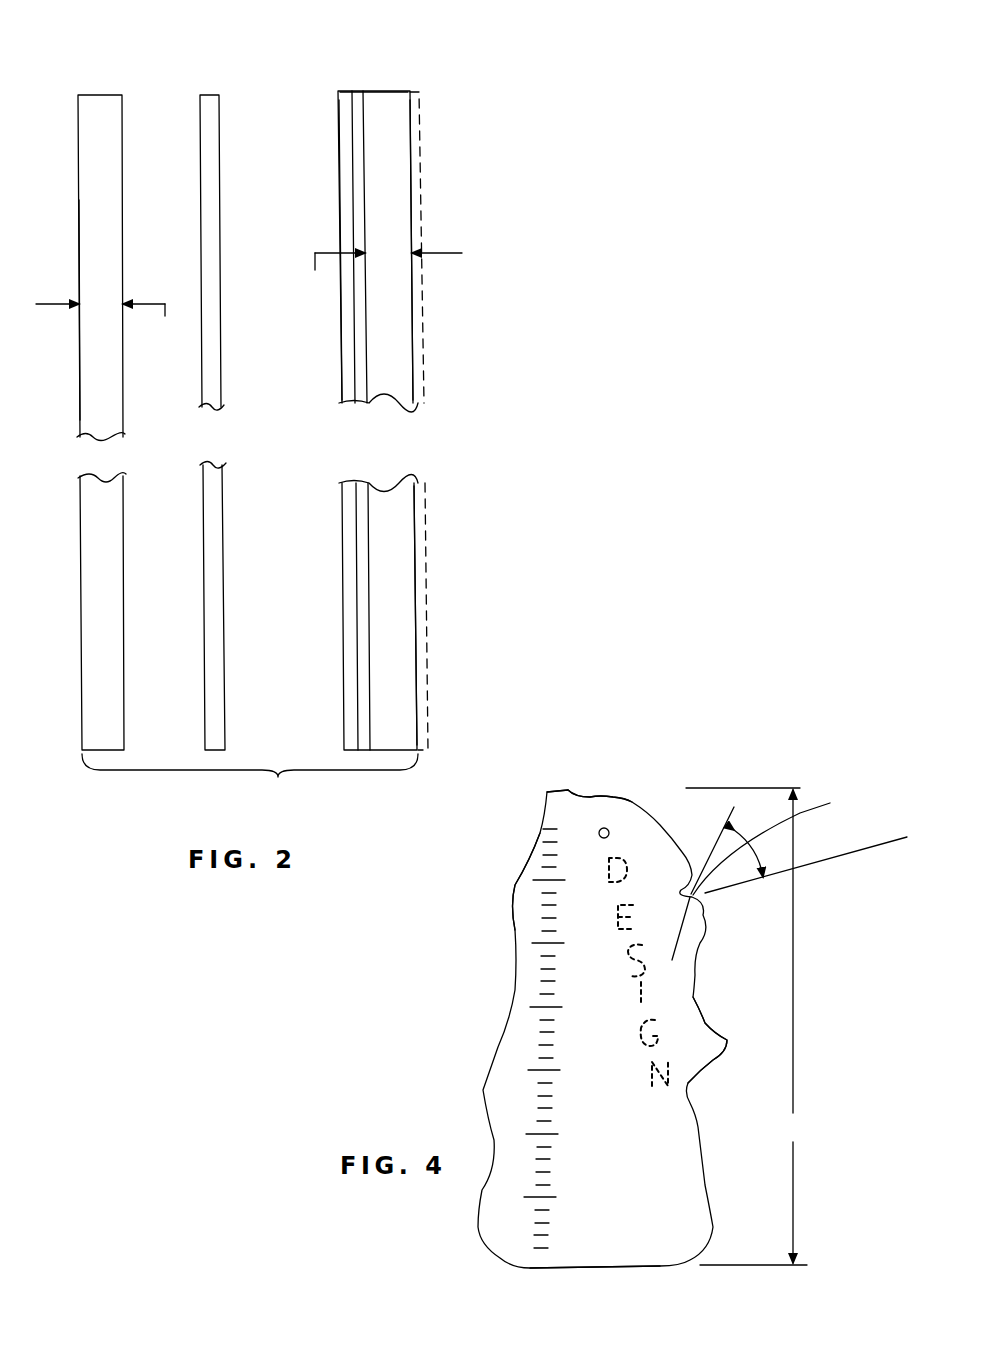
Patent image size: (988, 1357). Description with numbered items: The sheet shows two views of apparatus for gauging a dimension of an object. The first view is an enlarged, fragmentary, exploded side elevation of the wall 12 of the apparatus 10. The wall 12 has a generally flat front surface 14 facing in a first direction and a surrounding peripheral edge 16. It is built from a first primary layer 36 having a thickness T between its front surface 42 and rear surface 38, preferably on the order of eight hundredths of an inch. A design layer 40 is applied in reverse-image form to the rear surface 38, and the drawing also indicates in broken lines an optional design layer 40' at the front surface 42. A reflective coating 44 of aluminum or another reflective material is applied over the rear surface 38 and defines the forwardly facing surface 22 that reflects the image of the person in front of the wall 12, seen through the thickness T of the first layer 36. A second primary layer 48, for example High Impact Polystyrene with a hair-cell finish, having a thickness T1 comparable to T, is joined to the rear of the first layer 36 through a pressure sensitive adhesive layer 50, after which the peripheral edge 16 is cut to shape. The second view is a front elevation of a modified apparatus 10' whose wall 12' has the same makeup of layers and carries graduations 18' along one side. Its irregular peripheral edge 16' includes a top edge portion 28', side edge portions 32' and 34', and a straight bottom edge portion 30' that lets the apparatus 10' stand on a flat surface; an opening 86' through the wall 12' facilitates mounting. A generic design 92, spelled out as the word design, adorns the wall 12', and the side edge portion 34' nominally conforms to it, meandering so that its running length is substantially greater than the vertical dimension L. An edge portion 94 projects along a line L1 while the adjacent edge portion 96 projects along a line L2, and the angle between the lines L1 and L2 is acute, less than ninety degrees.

In FIG. 2, the apparatus for gauging a dimension of an object 10 is at (348, 378).
In FIG. 2, the wall 12 is at (250, 782).
In FIG. 2, the front surface 14 is at (413, 357).
In FIG. 2, the peripheral edge 16 is at (123, 393).
In FIG. 2, the forwardly facing surface 22 is at (355, 306).
In FIG. 2, the first primary layer 36 is at (398, 92).
In FIG. 2, the rear surface 38 is at (364, 168).
In FIG. 2, the design layer 40 is at (313, 420).
In FIG. 2, the optional design layer 40' is at (475, 414).
In FIG. 2, the front surface 42 is at (412, 178).
In FIG. 2, the reflective coating 44 is at (342, 352).
In FIG. 2, the second primary layer 48 is at (88, 344).
In FIG. 2, the pressure sensitive adhesive layer 50 is at (212, 113).
In FIG. 2, the thickness T is at (383, 275).
In FIG. 2, the thickness T1 is at (109, 325).
In FIG. 4, the apparatus for gauging the dimensions of an object 10' is at (591, 1029).
In FIG. 4, the wall 12' is at (726, 1018).
In FIG. 4, the irregular peripheral edge 16' is at (600, 757).
In FIG. 4, the graduations 18' is at (579, 1038).
In FIG. 4, the top edge portion 28' is at (539, 760).
In FIG. 4, the bottom edge portion 30' is at (611, 1299).
In FIG. 4, the side edge portion 32' is at (480, 953).
In FIG. 4, the side edge portion 34' is at (774, 1034).
In FIG. 4, the opening 86' is at (636, 788).
In FIG. 4, the design 92 is at (644, 893).
In FIG. 4, the edge portion 94 is at (673, 944).
In FIG. 4, the edge portion 96 is at (747, 841).
In FIG. 4, the vertical dimension L is at (746, 1026).
In FIG. 4, the line L1 is at (733, 834).
In FIG. 4, the line L2 is at (885, 840).